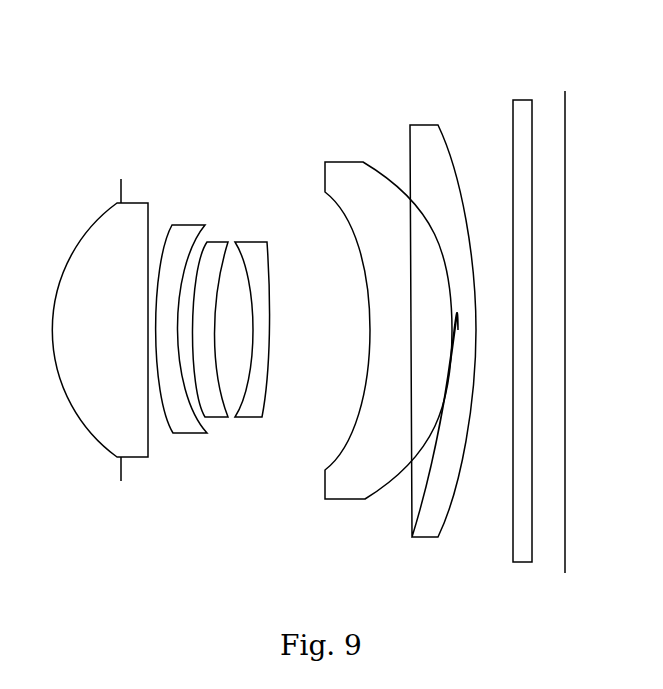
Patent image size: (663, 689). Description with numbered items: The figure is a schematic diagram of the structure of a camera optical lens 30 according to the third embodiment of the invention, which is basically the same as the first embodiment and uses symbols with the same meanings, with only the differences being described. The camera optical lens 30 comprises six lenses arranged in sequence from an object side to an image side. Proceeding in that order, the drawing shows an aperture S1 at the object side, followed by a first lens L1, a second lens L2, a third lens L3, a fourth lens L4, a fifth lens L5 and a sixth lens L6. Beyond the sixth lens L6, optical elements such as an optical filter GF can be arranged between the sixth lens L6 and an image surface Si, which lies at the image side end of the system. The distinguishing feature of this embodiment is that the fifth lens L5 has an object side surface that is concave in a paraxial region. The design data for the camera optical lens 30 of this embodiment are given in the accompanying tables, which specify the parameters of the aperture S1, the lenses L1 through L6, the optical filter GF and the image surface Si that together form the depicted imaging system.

The camera optical lens 30 is at (333, 34).
The aperture S1 is at (113, 316).
The first lens L1 is at (100, 318).
The second lens L2 is at (181, 314).
The third lens L3 is at (210, 317).
The fourth lens L4 is at (252, 317).
The fifth lens L5 is at (388, 316).
The sixth lens L6 is at (443, 319).
The optical filter GF is at (520, 315).
The image surface Si is at (557, 313).